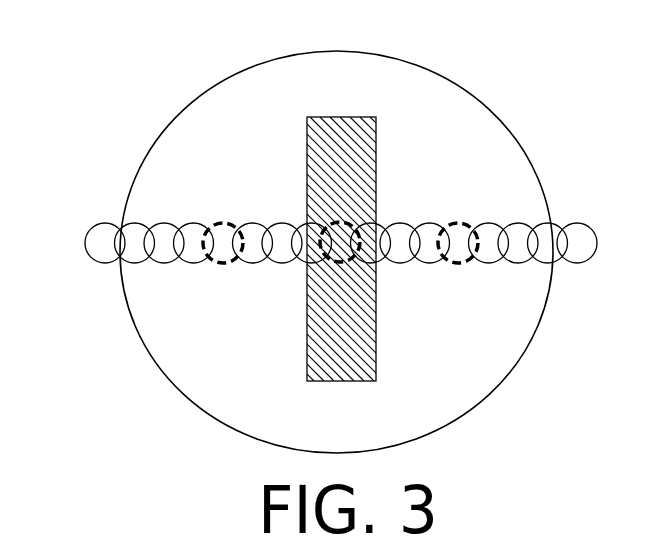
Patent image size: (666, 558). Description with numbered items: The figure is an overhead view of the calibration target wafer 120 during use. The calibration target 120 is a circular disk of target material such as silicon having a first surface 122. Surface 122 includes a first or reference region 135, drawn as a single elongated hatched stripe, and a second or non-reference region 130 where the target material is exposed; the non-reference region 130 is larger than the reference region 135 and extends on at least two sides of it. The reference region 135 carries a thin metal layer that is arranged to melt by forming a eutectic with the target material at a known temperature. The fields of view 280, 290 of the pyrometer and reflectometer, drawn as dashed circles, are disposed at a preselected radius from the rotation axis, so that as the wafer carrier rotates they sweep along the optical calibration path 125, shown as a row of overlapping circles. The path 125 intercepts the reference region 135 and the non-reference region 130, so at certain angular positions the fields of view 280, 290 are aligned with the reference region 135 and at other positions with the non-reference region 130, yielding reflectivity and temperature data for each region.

The calibration target wafer 120 is at (485, 398).
The first surface 122 is at (512, 168).
The optical calibration path 125 is at (101, 226).
The non-reference region 130 is at (242, 365).
The reference region 135 is at (358, 137).
The field of view 280 is at (222, 221).
The field of view 290 is at (352, 232).